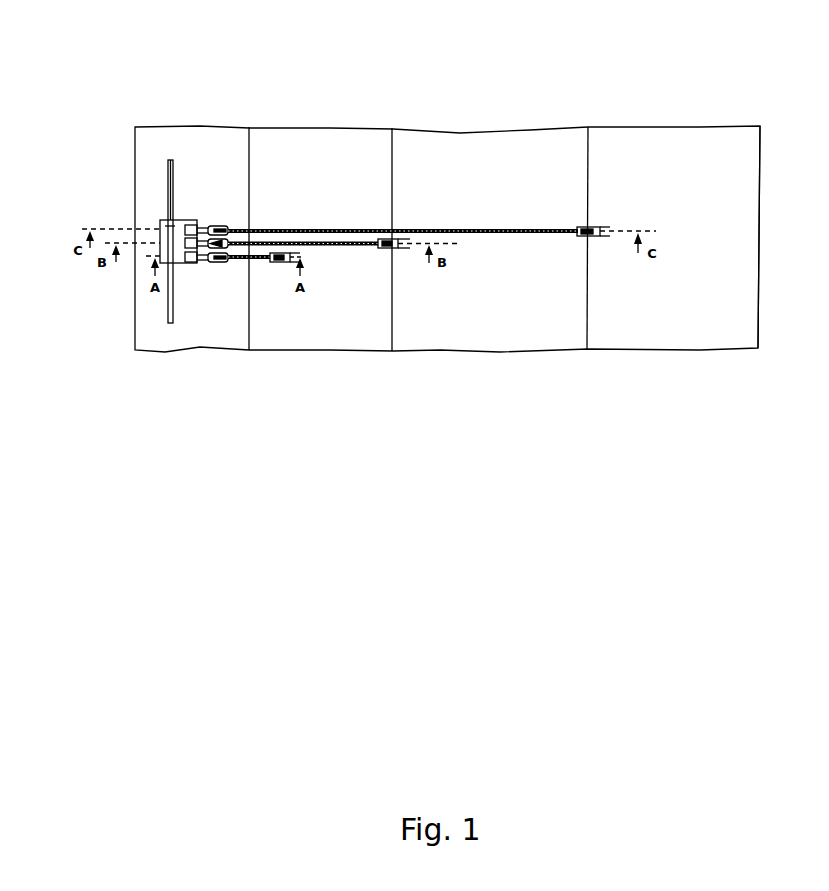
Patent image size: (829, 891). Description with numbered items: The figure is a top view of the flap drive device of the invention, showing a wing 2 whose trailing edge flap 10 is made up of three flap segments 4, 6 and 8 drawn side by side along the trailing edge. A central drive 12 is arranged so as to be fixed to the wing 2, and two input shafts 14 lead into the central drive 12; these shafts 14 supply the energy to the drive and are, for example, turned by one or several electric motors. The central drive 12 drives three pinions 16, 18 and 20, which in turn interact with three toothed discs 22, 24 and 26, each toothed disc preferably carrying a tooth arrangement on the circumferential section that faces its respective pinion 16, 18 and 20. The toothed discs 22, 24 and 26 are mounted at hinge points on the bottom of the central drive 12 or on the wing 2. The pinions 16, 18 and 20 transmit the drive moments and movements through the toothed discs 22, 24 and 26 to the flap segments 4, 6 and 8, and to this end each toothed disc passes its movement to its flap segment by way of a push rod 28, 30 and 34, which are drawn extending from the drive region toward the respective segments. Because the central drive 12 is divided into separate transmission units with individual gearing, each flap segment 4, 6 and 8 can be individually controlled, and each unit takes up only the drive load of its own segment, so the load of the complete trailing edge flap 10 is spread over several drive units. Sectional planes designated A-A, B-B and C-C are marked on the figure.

The wing 2 is at (236, 157).
The flap segment 4 is at (353, 158).
The flap segment 6 is at (483, 158).
The flap segment 8 is at (654, 158).
The trailing edge flap 10 is at (440, 390).
The central drive 12 is at (172, 224).
The input shafts 14 is at (167, 170).
The pinion 16 is at (190, 265).
The pinion 18 is at (183, 238).
The pinion 20 is at (160, 230).
The toothed disc 22 is at (207, 259).
The toothed disc 24 is at (216, 258).
The toothed disc 26 is at (207, 222).
The push rod 28 is at (302, 252).
The push rod 30 is at (473, 233).
The push rod 34 is at (250, 258).